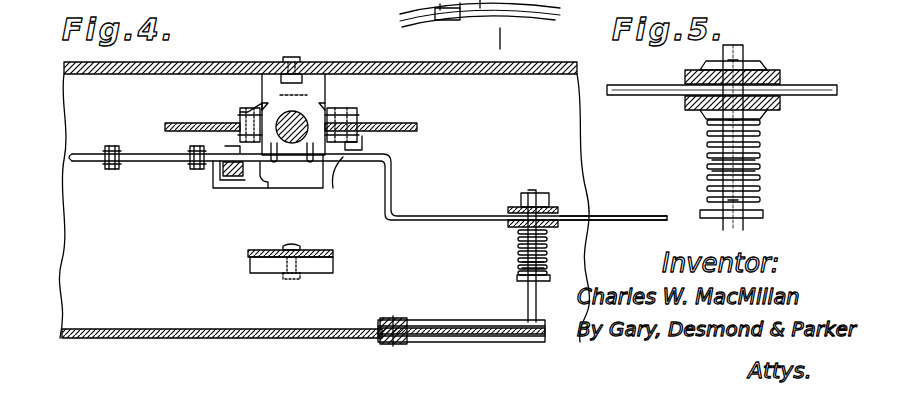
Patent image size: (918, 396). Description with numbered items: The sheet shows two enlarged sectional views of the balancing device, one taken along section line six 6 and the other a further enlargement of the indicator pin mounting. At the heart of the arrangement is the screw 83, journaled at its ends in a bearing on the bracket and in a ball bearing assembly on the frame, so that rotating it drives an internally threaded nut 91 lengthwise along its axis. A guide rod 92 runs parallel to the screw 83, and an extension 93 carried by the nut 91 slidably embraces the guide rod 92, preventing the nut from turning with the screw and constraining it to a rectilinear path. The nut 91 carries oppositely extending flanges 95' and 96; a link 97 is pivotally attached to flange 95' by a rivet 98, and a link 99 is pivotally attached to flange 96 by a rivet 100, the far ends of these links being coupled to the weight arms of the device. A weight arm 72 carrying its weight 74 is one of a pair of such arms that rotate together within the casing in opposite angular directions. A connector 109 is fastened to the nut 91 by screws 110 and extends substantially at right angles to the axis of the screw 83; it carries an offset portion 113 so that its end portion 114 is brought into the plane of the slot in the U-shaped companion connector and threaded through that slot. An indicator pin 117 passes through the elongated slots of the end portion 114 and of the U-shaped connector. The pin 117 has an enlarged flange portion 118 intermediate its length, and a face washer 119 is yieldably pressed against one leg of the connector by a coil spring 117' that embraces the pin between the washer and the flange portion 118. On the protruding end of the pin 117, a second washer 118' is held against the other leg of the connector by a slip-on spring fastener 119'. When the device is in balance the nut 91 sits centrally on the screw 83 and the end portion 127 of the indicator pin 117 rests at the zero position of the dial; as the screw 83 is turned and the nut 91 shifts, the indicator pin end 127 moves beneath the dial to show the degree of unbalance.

In FIG. 4, the section line indicator 6 is at (492, 42).
In FIG. 4, the weight arm 72 is at (336, 250).
In FIG. 4, the weight 74 is at (312, 274).
In FIG. 4, the screw 83 is at (305, 121).
In FIG. 4, the nut 91 is at (316, 98).
In FIG. 4, the guide rod 92 is at (255, 178).
In FIG. 4, the extension 93 is at (228, 146).
In FIG. 4, the flange 95' is at (369, 118).
In FIG. 4, the flange 96 is at (232, 112).
In FIG. 4, the link 97 is at (417, 126).
In FIG. 4, the rivet 98 is at (362, 136).
In FIG. 4, the link 99 is at (178, 122).
In FIG. 4, the rivet 100 is at (262, 104).
In FIG. 4, the connector 109 is at (335, 180).
In FIG. 4, the screws 110 is at (297, 188).
In FIG. 4, the offset portion 113 is at (391, 177).
In FIG. 4, the end portion 114 is at (660, 214).
In FIG. 5, the end portion 114 is at (722, 90).
In FIG. 4, the indicator pin 117 is at (502, 257).
In FIG. 5, the indicator pin 117 is at (760, 160).
In FIG. 4, the coil spring 117' is at (497, 276).
In FIG. 5, the coil spring 117' is at (763, 162).
In FIG. 4, the flange portion 118 is at (510, 292).
In FIG. 5, the flange portion 118 is at (756, 201).
In FIG. 4, the second washer 118' is at (513, 198).
In FIG. 5, the second washer 118' is at (711, 66).
In FIG. 4, the face washer 119 is at (510, 235).
In FIG. 5, the face washer 119 is at (716, 121).
In FIG. 4, the slip-on spring fastener 119' is at (543, 184).
In FIG. 5, the slip-on spring fastener 119' is at (757, 54).
In FIG. 4, the end portion of indicator pin 127 is at (530, 322).